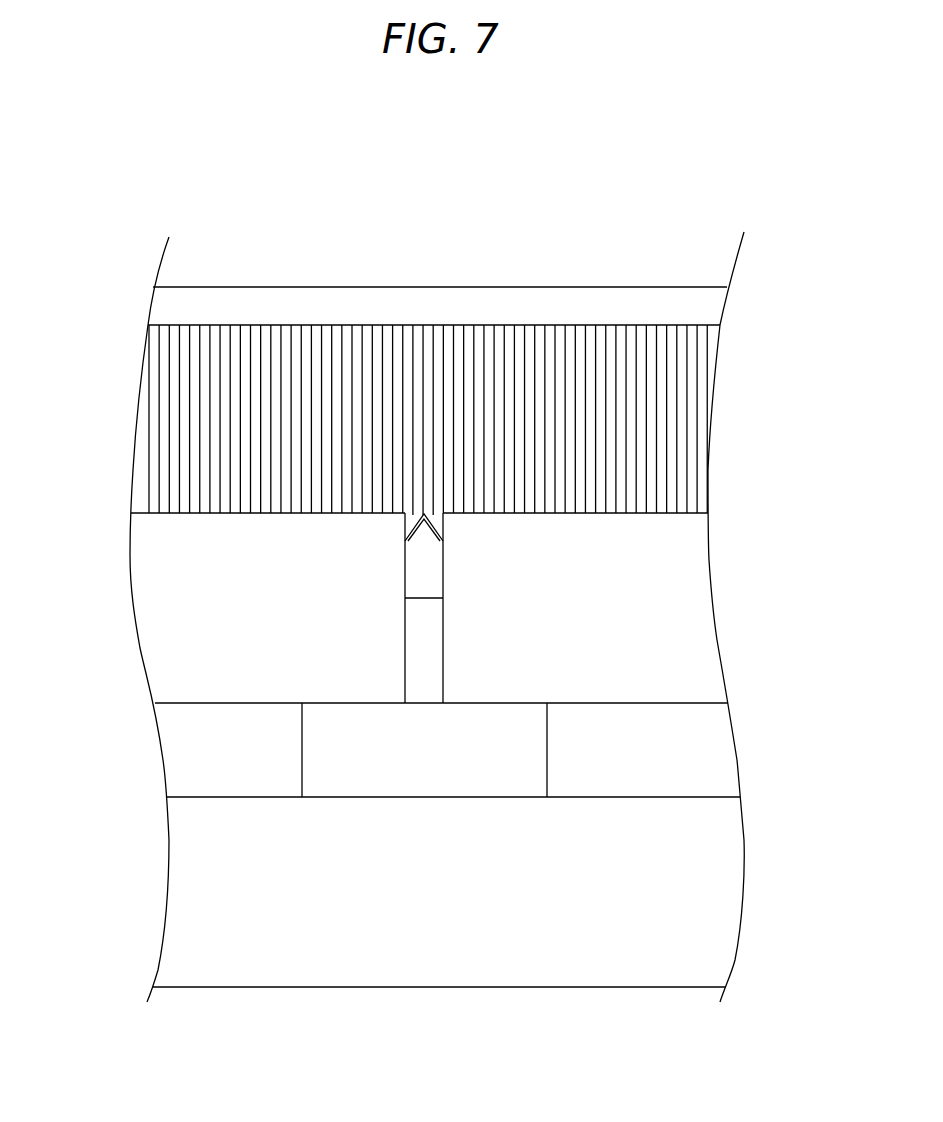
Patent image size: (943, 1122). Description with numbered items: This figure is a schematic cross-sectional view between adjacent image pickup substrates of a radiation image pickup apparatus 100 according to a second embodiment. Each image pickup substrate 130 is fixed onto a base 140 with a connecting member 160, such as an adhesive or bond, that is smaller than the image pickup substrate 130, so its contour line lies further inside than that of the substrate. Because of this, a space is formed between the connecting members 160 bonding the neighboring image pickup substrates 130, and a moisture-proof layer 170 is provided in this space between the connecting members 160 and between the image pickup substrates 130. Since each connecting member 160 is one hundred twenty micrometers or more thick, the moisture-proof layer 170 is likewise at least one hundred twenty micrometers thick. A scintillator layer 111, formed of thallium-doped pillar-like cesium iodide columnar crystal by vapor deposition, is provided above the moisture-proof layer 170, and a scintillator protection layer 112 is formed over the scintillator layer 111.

The radiation image pickup apparatus 100 is at (689, 170).
The scintillator layer 111 is at (455, 345).
The scintillator protection layer 112 is at (601, 287).
The image pickup substrate 130 is at (192, 645).
The base 140 is at (688, 868).
The connecting member 160 is at (190, 745).
The moisture-proof layer 170 is at (414, 772).